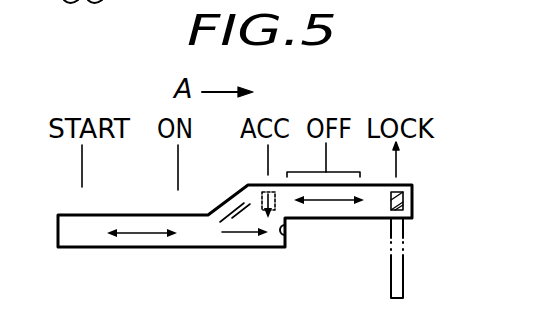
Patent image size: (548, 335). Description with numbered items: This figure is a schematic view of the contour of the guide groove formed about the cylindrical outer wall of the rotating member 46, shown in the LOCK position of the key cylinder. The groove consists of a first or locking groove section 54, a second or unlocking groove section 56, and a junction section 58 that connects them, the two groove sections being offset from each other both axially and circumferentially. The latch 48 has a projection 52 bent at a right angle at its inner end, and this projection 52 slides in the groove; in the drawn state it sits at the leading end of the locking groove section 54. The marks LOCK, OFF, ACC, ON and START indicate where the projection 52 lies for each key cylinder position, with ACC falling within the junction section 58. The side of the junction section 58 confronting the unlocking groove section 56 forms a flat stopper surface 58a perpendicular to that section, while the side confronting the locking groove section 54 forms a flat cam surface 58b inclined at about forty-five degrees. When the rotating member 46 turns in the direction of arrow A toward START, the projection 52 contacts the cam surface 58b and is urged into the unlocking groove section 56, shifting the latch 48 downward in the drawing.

The rotating member 46 is at (223, 302).
The latch 48 is at (405, 268).
The projection 52 is at (405, 197).
The first groove section 54 is at (337, 208).
The second groove section 56 is at (85, 233).
The junction section 58 is at (238, 225).
The stopper surface 58a is at (282, 236).
The cam surface 58b is at (232, 205).